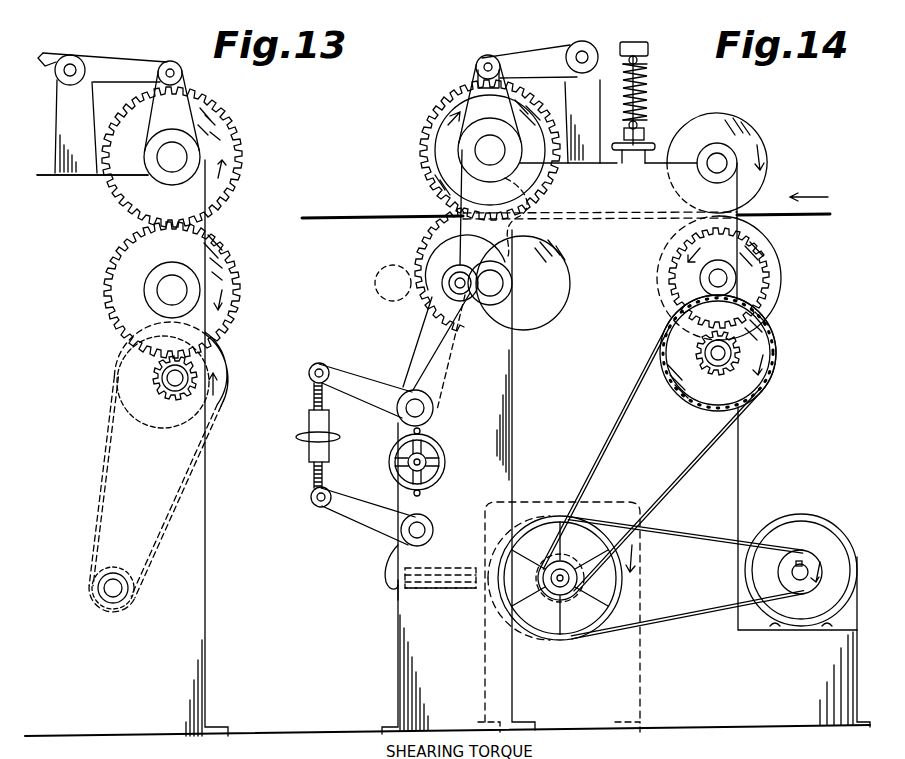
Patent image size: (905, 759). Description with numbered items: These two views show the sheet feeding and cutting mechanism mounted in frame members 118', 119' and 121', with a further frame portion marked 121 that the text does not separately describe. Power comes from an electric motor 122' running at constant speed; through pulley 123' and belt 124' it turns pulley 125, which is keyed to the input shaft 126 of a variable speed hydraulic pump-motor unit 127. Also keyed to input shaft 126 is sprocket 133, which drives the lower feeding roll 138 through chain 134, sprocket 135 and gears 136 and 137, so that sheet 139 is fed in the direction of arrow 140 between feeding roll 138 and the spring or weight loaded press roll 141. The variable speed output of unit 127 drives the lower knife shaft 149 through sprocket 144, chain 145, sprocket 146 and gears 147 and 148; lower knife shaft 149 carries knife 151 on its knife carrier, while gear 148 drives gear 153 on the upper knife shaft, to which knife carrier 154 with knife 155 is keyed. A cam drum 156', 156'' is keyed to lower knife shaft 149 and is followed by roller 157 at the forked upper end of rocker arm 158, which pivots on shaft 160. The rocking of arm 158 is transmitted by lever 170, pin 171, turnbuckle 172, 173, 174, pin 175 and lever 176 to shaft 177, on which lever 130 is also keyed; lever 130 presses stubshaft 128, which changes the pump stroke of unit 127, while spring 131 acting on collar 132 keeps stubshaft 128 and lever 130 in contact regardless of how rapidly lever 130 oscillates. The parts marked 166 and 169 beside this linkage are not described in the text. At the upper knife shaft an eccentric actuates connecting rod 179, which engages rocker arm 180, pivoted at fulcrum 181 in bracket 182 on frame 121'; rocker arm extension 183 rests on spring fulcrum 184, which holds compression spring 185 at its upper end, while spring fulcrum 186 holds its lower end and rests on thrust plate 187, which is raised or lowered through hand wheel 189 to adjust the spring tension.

In FIG. 14, the frame member 118' is at (443, 482).
In FIG. 14, the frame member 119' is at (804, 567).
In FIG. 13, the frame base 121 is at (88, 188).
In FIG. 13, the frame member 121' is at (220, 448).
In FIG. 14, the electric motor 122' is at (801, 562).
In FIG. 14, the pulley 123' is at (787, 550).
In FIG. 14, the belt 124' is at (686, 583).
In FIG. 14, the pulley 125 is at (615, 594).
In FIG. 14, the input shaft 126 is at (552, 598).
In FIG. 14, the variable speed hydraulic pump-motor unit 127 is at (642, 690).
In FIG. 14, the stubshaft 128 is at (444, 588).
In FIG. 14, the lever 130 is at (386, 568).
In FIG. 14, the spring 131 is at (398, 586).
In FIG. 14, the collar 132 is at (410, 570).
In FIG. 14, the sprocket 133 is at (575, 545).
In FIG. 14, the chain 134 is at (604, 444).
In FIG. 14, the sprocket 135 is at (680, 400).
In FIG. 14, the gear 136 is at (735, 350).
In FIG. 14, the gear 137 is at (770, 296).
In FIG. 14, the lower feeding roll 138 is at (780, 270).
In FIG. 14, the sheet 139 is at (790, 218).
In FIG. 14, the arrow 140 is at (566, 196).
In FIG. 14, the press roll 141 is at (757, 136).
In FIG. 13, the sprocket 144 is at (120, 567).
In FIG. 13, the chain 145 is at (108, 503).
In FIG. 13, the sprocket 146 is at (166, 428).
In FIG. 13, the gear 147 is at (212, 366).
In FIG. 13, the gear 148 is at (220, 250).
In FIG. 14, the gear 148 is at (440, 230).
In FIG. 13, the lower knife shaft 149 is at (185, 291).
In FIG. 14, the lower knife shaft 149 is at (492, 306).
In FIG. 14, the knife 151 is at (530, 218).
In FIG. 13, the gear 153 is at (232, 140).
In FIG. 14, the gear 153 is at (448, 104).
In FIG. 14, the knife carrier 154 is at (520, 160).
In FIG. 14, the knife 155 is at (522, 212).
In FIG. 14, the cam drum 156' is at (538, 283).
In FIG. 14, the cam drum 156'' is at (407, 269).
In FIG. 14, the roller 157 is at (449, 276).
In FIG. 14, the rocker arm 158 is at (428, 330).
In FIG. 14, the rocker shaft 160 is at (428, 404).
In FIG. 14, the hub 166 is at (430, 463).
In FIG. 14, the handwheel 169 is at (440, 450).
In FIG. 14, the lever 170 is at (350, 374).
In FIG. 14, the pin 171 is at (314, 366).
In FIG. 14, the turnbuckle 172 is at (313, 394).
In FIG. 14, the turnbuckle 173 is at (297, 440).
In FIG. 14, the turnbuckle 174 is at (313, 473).
In FIG. 14, the pin 175 is at (312, 502).
In FIG. 14, the lever 176 is at (348, 523).
In FIG. 14, the shaft 177 is at (426, 525).
In FIG. 13, the connecting rod 179 is at (180, 101).
In FIG. 13, the rocker arm 180 is at (125, 52).
In FIG. 14, the rocker arm 180 is at (515, 50).
In FIG. 13, the fulcrum 181 is at (70, 65).
In FIG. 14, the fulcrum 181 is at (587, 46).
In FIG. 13, the bracket 182 is at (56, 122).
In FIG. 14, the bracket 182 is at (566, 80).
In FIG. 14, the rocker arm extension 183 is at (647, 46).
In FIG. 14, the spring fulcrum 184 is at (640, 60).
In FIG. 14, the compression spring 185 is at (646, 84).
In FIG. 14, the spring fulcrum 186 is at (646, 120).
In FIG. 14, the thrust plate 187 is at (648, 131).
In FIG. 14, the hand wheel 189 is at (660, 145).